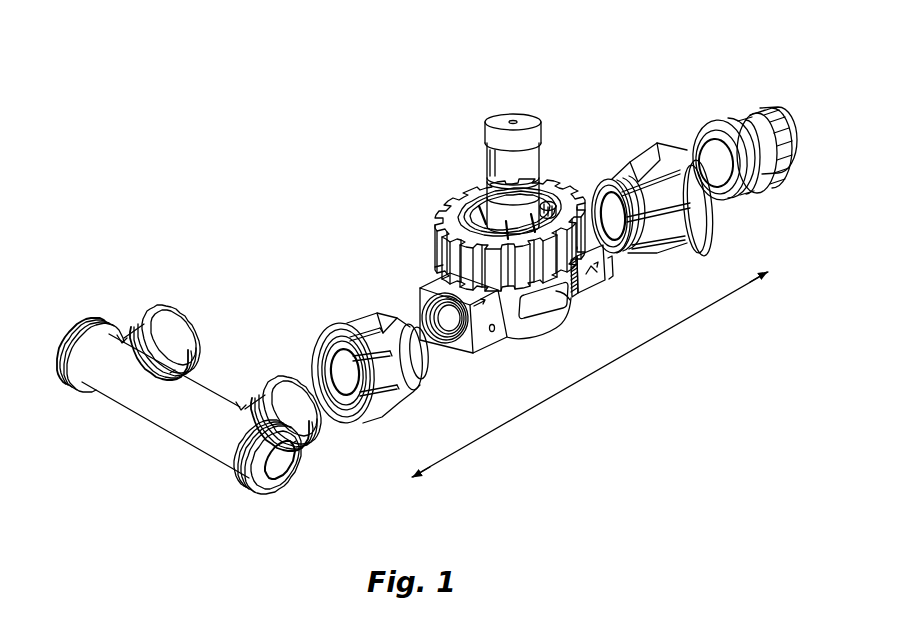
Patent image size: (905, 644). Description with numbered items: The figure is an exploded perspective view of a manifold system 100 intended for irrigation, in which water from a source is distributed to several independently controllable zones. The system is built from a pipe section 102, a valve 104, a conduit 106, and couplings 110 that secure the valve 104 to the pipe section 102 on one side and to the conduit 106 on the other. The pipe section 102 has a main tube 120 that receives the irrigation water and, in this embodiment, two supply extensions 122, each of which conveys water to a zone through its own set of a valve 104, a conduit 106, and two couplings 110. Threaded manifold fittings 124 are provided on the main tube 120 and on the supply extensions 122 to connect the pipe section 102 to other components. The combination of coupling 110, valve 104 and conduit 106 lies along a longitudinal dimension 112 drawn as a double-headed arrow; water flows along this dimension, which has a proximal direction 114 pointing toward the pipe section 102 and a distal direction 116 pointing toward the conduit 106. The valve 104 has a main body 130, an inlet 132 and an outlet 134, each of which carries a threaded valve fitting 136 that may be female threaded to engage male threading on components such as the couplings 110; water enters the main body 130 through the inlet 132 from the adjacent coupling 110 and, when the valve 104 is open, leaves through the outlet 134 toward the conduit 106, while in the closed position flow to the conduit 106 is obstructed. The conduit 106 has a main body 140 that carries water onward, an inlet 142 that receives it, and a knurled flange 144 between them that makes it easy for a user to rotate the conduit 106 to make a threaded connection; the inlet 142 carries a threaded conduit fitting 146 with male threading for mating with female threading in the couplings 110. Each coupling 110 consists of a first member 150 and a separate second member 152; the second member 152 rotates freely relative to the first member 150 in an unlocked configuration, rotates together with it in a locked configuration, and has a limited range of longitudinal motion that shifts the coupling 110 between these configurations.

The manifold system 100 is at (367, 44).
The pipe section 102 is at (137, 460).
The valve 104 is at (397, 236).
The conduit 106 is at (705, 86).
The coupling 110 is at (311, 299).
The longitudinal dimension 112 is at (606, 368).
The proximal direction 114 is at (465, 450).
The distal direction 116 is at (745, 288).
The main tube 120 is at (195, 438).
The supply extension 122 is at (265, 405).
The threaded manifold fitting 124 is at (180, 310).
The main body 130 is at (553, 333).
The inlet 132 is at (487, 345).
The outlet 134 is at (585, 284).
The threaded valve fitting 136 is at (447, 360).
The main body 140 is at (762, 115).
The inlet 142 is at (723, 197).
The flange 144 is at (763, 190).
The threaded conduit fitting 146 is at (748, 197).
The first member 150 is at (411, 397).
The second member 152 is at (376, 417).